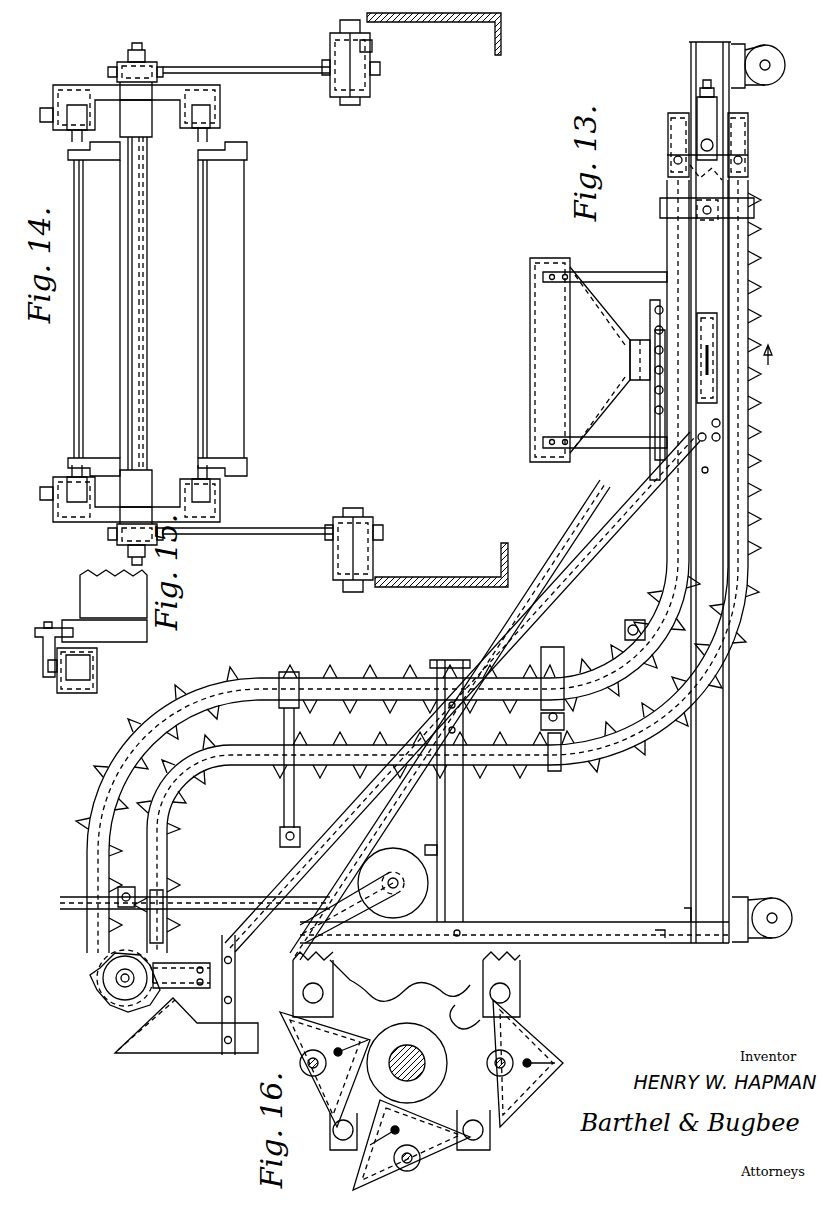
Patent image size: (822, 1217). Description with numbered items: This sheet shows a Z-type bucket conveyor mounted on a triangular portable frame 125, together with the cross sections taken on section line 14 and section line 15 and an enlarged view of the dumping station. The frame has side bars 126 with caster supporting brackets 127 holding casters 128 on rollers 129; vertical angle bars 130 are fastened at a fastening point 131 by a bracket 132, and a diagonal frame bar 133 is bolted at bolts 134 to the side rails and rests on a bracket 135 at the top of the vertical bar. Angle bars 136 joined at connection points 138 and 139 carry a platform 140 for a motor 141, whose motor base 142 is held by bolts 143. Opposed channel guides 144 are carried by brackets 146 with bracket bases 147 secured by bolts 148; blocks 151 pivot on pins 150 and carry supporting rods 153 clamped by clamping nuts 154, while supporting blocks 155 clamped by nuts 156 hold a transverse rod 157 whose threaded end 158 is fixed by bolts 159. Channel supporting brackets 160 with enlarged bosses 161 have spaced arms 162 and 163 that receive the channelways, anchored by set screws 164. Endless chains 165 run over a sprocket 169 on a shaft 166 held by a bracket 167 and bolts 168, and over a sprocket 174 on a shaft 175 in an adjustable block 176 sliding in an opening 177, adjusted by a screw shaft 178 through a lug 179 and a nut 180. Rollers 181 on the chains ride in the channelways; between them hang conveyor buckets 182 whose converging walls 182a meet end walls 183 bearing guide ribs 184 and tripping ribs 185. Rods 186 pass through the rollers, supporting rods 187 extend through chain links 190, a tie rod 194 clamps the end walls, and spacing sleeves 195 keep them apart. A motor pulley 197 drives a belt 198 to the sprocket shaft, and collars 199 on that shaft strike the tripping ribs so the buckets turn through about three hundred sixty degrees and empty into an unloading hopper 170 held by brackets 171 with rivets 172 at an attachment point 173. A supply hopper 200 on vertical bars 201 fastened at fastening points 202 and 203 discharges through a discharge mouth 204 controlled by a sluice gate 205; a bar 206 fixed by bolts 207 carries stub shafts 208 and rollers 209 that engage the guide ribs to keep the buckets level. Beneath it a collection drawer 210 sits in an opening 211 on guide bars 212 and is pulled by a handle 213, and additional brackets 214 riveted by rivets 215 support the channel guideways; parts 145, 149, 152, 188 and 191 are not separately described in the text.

In FIG. 13, the section line 14 is at (60, 895).
In FIG. 13, the section line 15 is at (640, 302).
In FIG. 13, the portable frame 125 is at (612, 944).
In FIG. 13, the side bars 126 is at (730, 765).
In FIG. 13, the caster supporting brackets 127 is at (742, 75).
In FIG. 13, the casters 128 is at (758, 90).
In FIG. 13, the rollers 129 is at (768, 72).
In FIG. 13, the vertical angle bars 130 is at (580, 922).
In FIG. 13, the fastening point 131 is at (680, 918).
In FIG. 13, the bracket 132 is at (665, 928).
In FIG. 13, the diagonal frame bar 133 is at (500, 650).
In FIG. 14, the diagonal frame bar 133 is at (455, 22).
In FIG. 15, the diagonal frame bar 133 is at (452, 577).
In FIG. 13, the bolts 134 is at (690, 515).
In FIG. 13, the bracket 135 is at (262, 950).
In FIG. 13, the angle bars 136 is at (465, 822).
In FIG. 14, the angle bars 136 is at (335, 38).
In FIG. 13, the connection point 138 is at (445, 678).
In FIG. 13, the connection point 139 is at (463, 903).
In FIG. 13, the platform 140 is at (445, 868).
In FIG. 13, the motor 141 is at (398, 848).
In FIG. 13, the motor base 142 is at (430, 845).
In FIG. 16, the bolts 143 is at (422, 980).
In FIG. 13, the channel guides 144 is at (752, 490).
In FIG. 14, the channel guides 144 is at (68, 132).
In FIG. 15, the channel guides 144 is at (68, 478).
In FIG. 14, the bracket 145 is at (215, 87).
In FIG. 15, the bracket 145 is at (55, 512).
In FIG. 13, the brackets 146 is at (278, 838).
In FIG. 15, the brackets 146 is at (333, 568).
In FIG. 13, the bracket bases 147 is at (280, 845).
In FIG. 14, the bracket bases 147 is at (380, 48).
In FIG. 15, the bracket bases 147 is at (375, 565).
In FIG. 13, the bolts 148 is at (296, 830).
In FIG. 14, the bolts 148 is at (382, 62).
In FIG. 15, the bolts 148 is at (378, 575).
In FIG. 13, the fitting 149 is at (634, 625).
In FIG. 14, the fitting 149 is at (340, 36).
In FIG. 15, the fitting 149 is at (333, 555).
In FIG. 13, the pins 150 is at (300, 838).
In FIG. 14, the pins 150 is at (348, 97).
In FIG. 15, the pins 150 is at (353, 517).
In FIG. 13, the blocks 151 is at (278, 840).
In FIG. 14, the blocks 151 is at (332, 80).
In FIG. 15, the blocks 151 is at (336, 520).
In FIG. 14, the connector 152 is at (372, 45).
In FIG. 15, the connector 152 is at (345, 587).
In FIG. 13, the supporting rods 153 is at (283, 795).
In FIG. 14, the supporting rods 153 is at (234, 66).
In FIG. 15, the supporting rods 153 is at (266, 537).
In FIG. 13, the clamping nuts 154 is at (282, 826).
In FIG. 14, the clamping nuts 154 is at (322, 65).
In FIG. 15, the clamping nuts 154 is at (325, 525).
In FIG. 13, the supporting blocks 155 is at (298, 715).
In FIG. 14, the supporting blocks 155 is at (120, 65).
In FIG. 15, the supporting blocks 155 is at (120, 540).
In FIG. 13, the nuts 156 is at (280, 676).
In FIG. 14, the nuts 156 is at (110, 70).
In FIG. 15, the nuts 156 is at (118, 524).
In FIG. 15, the transverse rod 157 is at (145, 470).
In FIG. 13, the threaded end 158 is at (280, 712).
In FIG. 14, the threaded end 158 is at (139, 52).
In FIG. 15, the threaded end 158 is at (130, 552).
In FIG. 14, the bolts 159 is at (130, 55).
In FIG. 15, the bolts 159 is at (142, 563).
In FIG. 13, the channel supporting brackets 160 is at (288, 672).
In FIG. 14, the channel supporting brackets 160 is at (78, 85).
In FIG. 15, the channel supporting brackets 160 is at (175, 522).
In FIG. 14, the enlarged bosses 161 is at (146, 112).
In FIG. 15, the enlarged bosses 161 is at (150, 505).
In FIG. 14, the spaced arm 162 is at (53, 115).
In FIG. 15, the spaced arm 162 is at (53, 482).
In FIG. 14, the spaced arm 163 is at (92, 108).
In FIG. 15, the spaced arm 163 is at (92, 500).
In FIG. 14, the set screws 164 is at (40, 112).
In FIG. 15, the set screws 164 is at (40, 494).
In FIG. 13, the endless chains 165 is at (660, 160).
In FIG. 14, the endless chains 165 is at (76, 92).
In FIG. 15, the endless chains 165 is at (68, 462).
In FIG. 13, the shaft 166 is at (748, 272).
In FIG. 16, the shaft 166 is at (425, 1058).
In FIG. 13, the bracket 167 is at (174, 1000).
In FIG. 13, the bolts 168 is at (200, 988).
In FIG. 13, the sprocket 169 is at (128, 955).
In FIG. 16, the sprocket 169 is at (470, 990).
In FIG. 13, the unloading hopper 170 is at (150, 1055).
In FIG. 13, the brackets 171 is at (236, 985).
In FIG. 13, the rivets 172 is at (229, 1055).
In FIG. 13, the attachment point 173 is at (236, 965).
In FIG. 13, the sprocket 174 is at (690, 175).
In FIG. 13, the shaft 175 is at (672, 140).
In FIG. 13, the adjustable block 176 is at (678, 120).
In FIG. 13, the opening 177 is at (738, 155).
In FIG. 13, the screw shaft 178 is at (722, 128).
In FIG. 13, the lug 179 is at (697, 105).
In FIG. 13, the nut 180 is at (702, 88).
In FIG. 13, the rollers 181 is at (98, 995).
In FIG. 14, the rollers 181 is at (208, 92).
In FIG. 15, the rollers 181 is at (82, 458).
In FIG. 13, the conveyor buckets 182 is at (222, 688).
In FIG. 14, the conveyor buckets 182 is at (147, 315).
In FIG. 15, the conveyor buckets 182 is at (246, 348).
In FIG. 16, the conveyor buckets 182 is at (330, 985).
In FIG. 14, the converging walls 182a is at (120, 272).
In FIG. 14, the end walls 183 is at (112, 150).
In FIG. 15, the end walls 183 is at (112, 458).
In FIG. 16, the end walls 183 is at (345, 1075).
In FIG. 13, the guide ribs 184 is at (110, 1008).
In FIG. 14, the guide ribs 184 is at (202, 92).
In FIG. 15, the guide ribs 184 is at (68, 455).
In FIG. 16, the guide ribs 184 is at (490, 1005).
In FIG. 14, the tripping ribs 185 is at (126, 100).
In FIG. 15, the tripping ribs 185 is at (127, 507).
In FIG. 16, the tripping ribs 185 is at (365, 1038).
In FIG. 14, the rods 186 is at (198, 150).
In FIG. 15, the rods 186 is at (72, 460).
In FIG. 16, the rods 186 is at (330, 1080).
In FIG. 14, the supporting rods 187 is at (66, 110).
In FIG. 15, the supporting rods 187 is at (68, 520).
In FIG. 16, the supporting rods 187 is at (300, 1063).
In FIG. 16, the link 188 is at (540, 1050).
In FIG. 13, the chain links 190 is at (540, 948).
In FIG. 14, the chain links 190 is at (88, 150).
In FIG. 15, the chain links 190 is at (76, 458).
In FIG. 14, the packing 191 is at (62, 92).
In FIG. 15, the packing 191 is at (76, 520).
In FIG. 16, the tie rod 194 is at (345, 1050).
In FIG. 14, the spacing sleeves 195 is at (78, 340).
In FIG. 15, the spacing sleeves 195 is at (200, 375).
In FIG. 13, the motor pulley 197 is at (393, 878).
In FIG. 13, the belt 198 is at (340, 900).
In FIG. 16, the collars 199 is at (406, 1023).
In FIG. 13, the supply hopper 200 is at (530, 355).
In FIG. 13, the vertical bars 201 is at (596, 272).
In FIG. 13, the fastening point 202 is at (568, 290).
In FIG. 13, the fastening point 203 is at (702, 442).
In FIG. 13, the discharge mouth 204 is at (641, 380).
In FIG. 13, the sluice gate 205 is at (660, 240).
In FIG. 15, the sluice gate 205 is at (43, 650).
In FIG. 13, the bar 206 is at (650, 300).
In FIG. 15, the bar 206 is at (57, 685).
In FIG. 13, the bolts 207 is at (656, 300).
In FIG. 15, the bolts 207 is at (43, 667).
In FIG. 13, the stub shafts 208 is at (658, 370).
In FIG. 15, the stub shafts 208 is at (48, 628).
In FIG. 13, the rollers 209 is at (658, 328).
In FIG. 13, the collection drawer 210 is at (715, 330).
In FIG. 13, the opening 211 is at (748, 403).
In FIG. 13, the screw 212 is at (750, 300).
In FIG. 13, the handle 213 is at (712, 357).
In FIG. 13, the additional brackets 214 is at (660, 205).
In FIG. 13, the rivets 215 is at (706, 215).